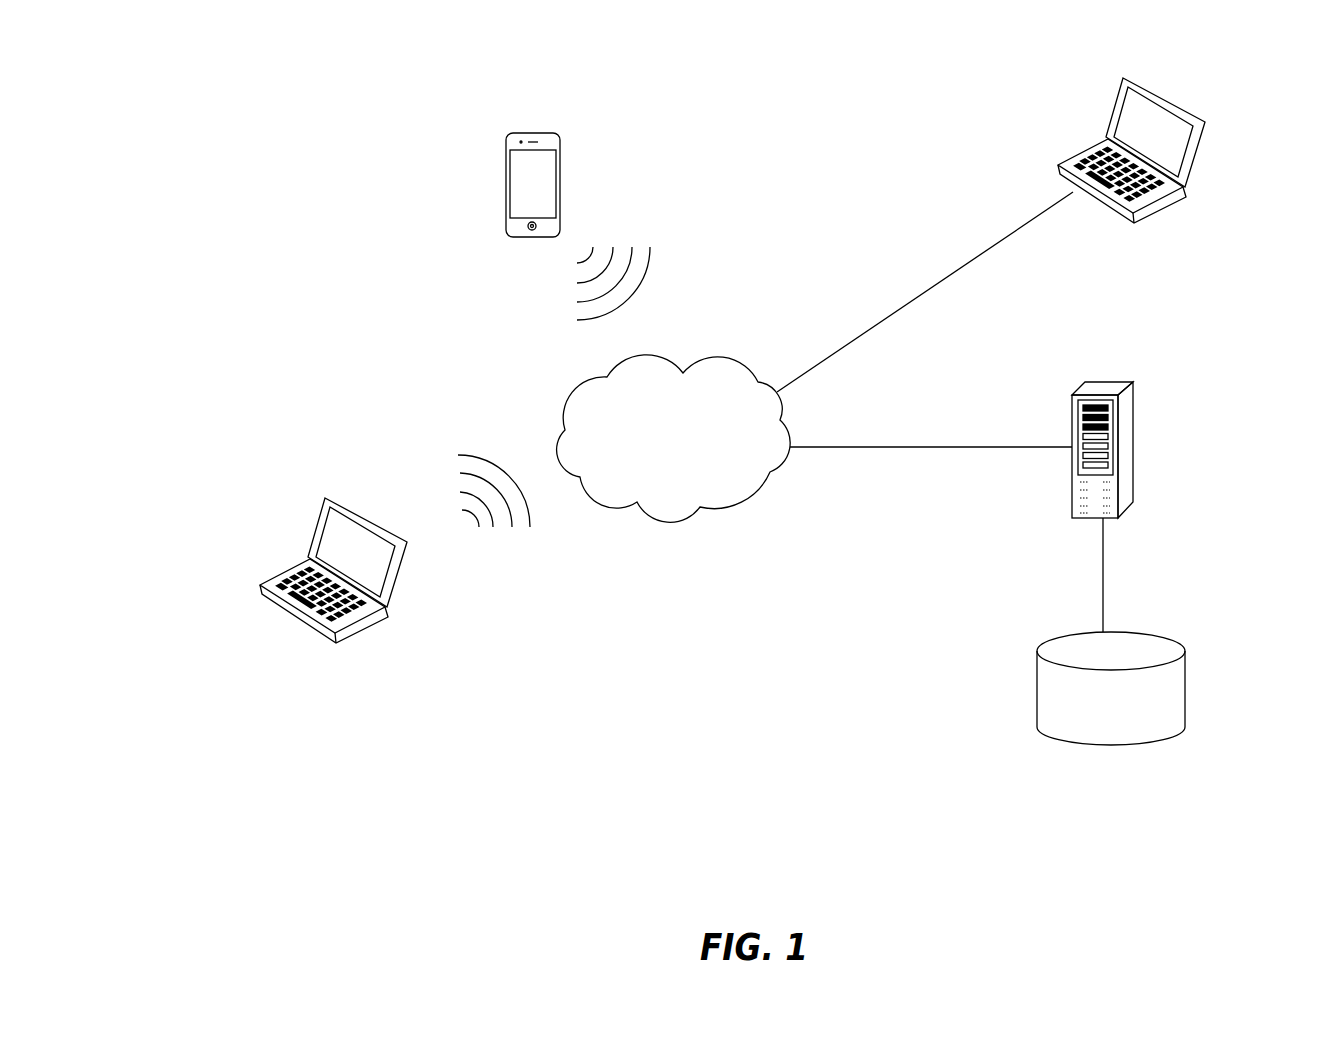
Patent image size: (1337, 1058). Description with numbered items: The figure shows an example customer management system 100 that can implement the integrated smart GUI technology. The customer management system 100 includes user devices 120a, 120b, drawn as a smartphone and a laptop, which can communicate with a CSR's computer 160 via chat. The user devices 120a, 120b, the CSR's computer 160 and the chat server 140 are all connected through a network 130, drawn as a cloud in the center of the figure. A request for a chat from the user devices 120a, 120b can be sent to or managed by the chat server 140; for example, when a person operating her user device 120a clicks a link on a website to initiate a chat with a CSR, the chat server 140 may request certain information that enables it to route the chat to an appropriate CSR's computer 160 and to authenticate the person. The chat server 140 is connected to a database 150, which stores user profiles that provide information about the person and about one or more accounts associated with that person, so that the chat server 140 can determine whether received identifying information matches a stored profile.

The customer management system 100 is at (229, 128).
The user device 120a is at (552, 133).
The user device 120b is at (402, 573).
The network 130 is at (737, 360).
The chat server 140 is at (1117, 378).
The database 150 is at (1163, 635).
The CSR's computer 160 is at (1200, 155).